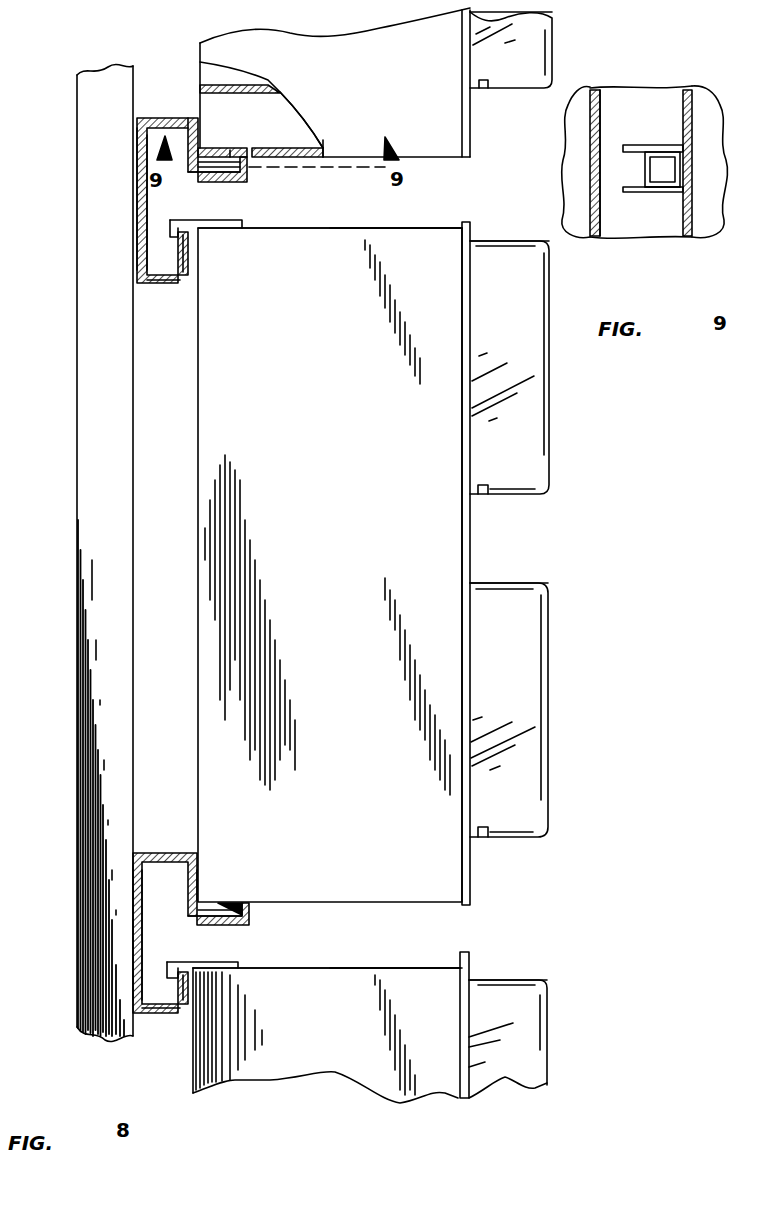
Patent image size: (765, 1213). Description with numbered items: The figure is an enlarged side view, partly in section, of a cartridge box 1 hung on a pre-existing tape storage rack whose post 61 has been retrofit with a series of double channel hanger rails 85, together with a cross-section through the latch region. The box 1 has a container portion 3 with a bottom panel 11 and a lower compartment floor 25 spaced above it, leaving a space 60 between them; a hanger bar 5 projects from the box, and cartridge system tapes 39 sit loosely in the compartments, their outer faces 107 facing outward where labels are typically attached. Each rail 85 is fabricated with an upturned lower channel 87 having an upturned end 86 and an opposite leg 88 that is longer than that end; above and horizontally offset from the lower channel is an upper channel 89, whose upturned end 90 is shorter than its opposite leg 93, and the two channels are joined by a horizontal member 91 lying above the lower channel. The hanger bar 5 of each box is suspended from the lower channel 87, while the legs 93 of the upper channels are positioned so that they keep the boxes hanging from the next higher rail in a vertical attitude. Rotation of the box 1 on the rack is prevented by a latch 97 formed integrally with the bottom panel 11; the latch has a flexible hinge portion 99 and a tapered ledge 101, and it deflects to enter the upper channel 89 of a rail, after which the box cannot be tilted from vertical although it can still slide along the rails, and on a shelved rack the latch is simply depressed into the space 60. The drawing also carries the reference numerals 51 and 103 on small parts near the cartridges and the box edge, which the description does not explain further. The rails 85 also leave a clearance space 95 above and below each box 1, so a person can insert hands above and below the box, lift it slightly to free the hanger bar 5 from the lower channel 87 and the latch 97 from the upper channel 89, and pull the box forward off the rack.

In FIG. 8, the box 1 is at (441, 212).
In FIG. 8, the container portion 3 is at (356, 465).
In FIG. 8, the hanger bar 5 is at (205, 212).
In FIG. 8, the bottom panel 11 is at (318, 142).
In FIG. 9, the bottom panel 11 is at (638, 222).
In FIG. 8, the floor 25 is at (262, 88).
In FIG. 8, the cartridge system tape 39 is at (519, 90).
In FIG. 8, the clip 51 is at (496, 100).
In FIG. 8, the space 60 is at (300, 130).
In FIG. 8, the post 61 is at (100, 356).
In FIG. 8, the double channel hanger rail 85 is at (158, 108).
In FIG. 8, the upturned end 86 is at (190, 252).
In FIG. 8, the lower channel 87 is at (155, 284).
In FIG. 9, the lower channel 87 is at (596, 154).
In FIG. 8, the leg 88 is at (137, 240).
In FIG. 8, the upper channel 89 is at (228, 182).
In FIG. 8, the upturned end 90 is at (250, 168).
In FIG. 8, the horizontal member 91 is at (138, 150).
In FIG. 8, the leg 93 is at (186, 130).
In FIG. 8, the clearance space 95 is at (429, 221).
In FIG. 8, the latch 97 is at (240, 141).
In FIG. 9, the latch 97 is at (653, 200).
In FIG. 9, the flexible hinge portion 99 is at (624, 170).
In FIG. 8, the tapered ledge 101 is at (215, 150).
In FIG. 9, the tapered ledge 101 is at (672, 174).
In FIG. 8, the panel edge strip 103 is at (298, 160).
In FIG. 8, the cartridge outer face 107 is at (552, 46).